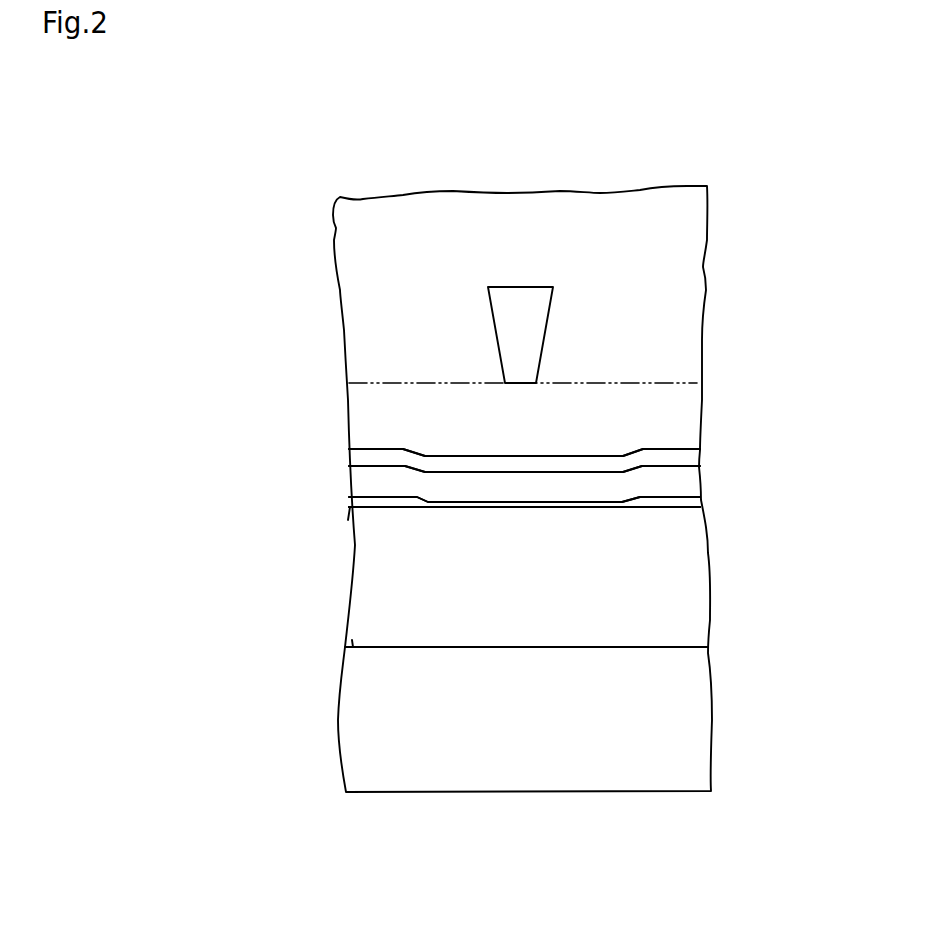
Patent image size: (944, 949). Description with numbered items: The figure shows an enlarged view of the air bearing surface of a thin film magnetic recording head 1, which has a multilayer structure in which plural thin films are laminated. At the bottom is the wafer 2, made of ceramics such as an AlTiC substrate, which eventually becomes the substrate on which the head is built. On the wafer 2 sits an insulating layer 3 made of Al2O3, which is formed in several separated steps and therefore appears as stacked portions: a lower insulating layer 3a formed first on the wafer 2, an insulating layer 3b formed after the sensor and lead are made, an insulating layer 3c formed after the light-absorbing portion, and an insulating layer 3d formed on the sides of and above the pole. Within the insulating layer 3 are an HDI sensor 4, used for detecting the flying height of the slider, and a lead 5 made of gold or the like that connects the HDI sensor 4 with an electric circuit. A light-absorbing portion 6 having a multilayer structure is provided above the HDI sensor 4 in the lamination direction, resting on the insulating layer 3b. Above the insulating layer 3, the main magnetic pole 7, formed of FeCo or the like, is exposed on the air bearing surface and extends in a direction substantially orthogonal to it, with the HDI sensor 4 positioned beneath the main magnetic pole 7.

The thin film magnetic recording head 1 is at (737, 183).
The wafer 2 is at (702, 773).
The insulating layer 3 is at (130, 438).
The insulating layer 3a is at (360, 593).
The insulating layer 3b is at (368, 485).
The insulating layer 3c is at (375, 422).
The insulating layer 3d is at (370, 357).
The HDI sensor 4 is at (585, 506).
The lead 5 is at (357, 503).
The light-absorbing portion 6 is at (682, 445).
The main magnetic pole 7 is at (532, 333).